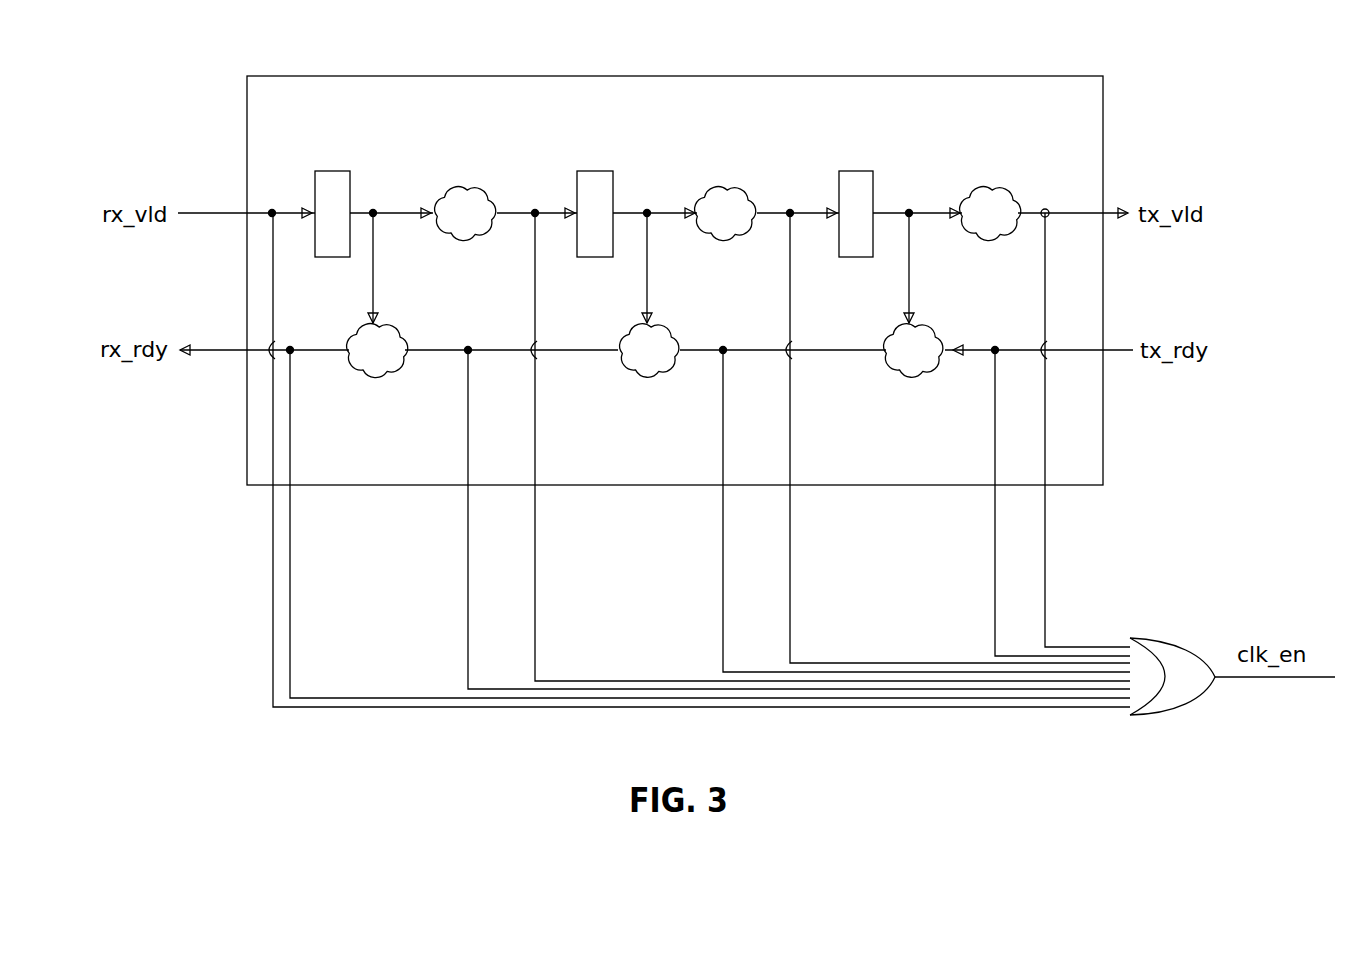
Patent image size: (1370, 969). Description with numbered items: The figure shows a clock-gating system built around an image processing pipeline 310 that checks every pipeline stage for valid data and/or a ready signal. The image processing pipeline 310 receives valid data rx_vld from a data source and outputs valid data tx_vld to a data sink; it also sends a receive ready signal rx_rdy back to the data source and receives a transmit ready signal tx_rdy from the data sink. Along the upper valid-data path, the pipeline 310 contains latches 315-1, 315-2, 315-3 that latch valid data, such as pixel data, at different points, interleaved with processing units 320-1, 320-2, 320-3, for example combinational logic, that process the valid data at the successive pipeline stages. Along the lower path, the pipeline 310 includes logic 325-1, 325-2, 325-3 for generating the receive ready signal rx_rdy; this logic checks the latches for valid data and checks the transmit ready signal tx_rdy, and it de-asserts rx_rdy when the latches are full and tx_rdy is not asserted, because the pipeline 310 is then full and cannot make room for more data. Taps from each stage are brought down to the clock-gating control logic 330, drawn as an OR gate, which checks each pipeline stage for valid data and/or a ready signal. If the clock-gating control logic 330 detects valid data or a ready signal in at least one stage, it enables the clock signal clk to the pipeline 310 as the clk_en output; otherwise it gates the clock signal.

The image processing pipeline 310 is at (878, 76).
The latch 315-1 is at (337, 171).
The latch 315-2 is at (596, 171).
The latch 315-3 is at (856, 171).
The processing unit 320-1 is at (458, 187).
The processing unit 320-2 is at (718, 187).
The processing unit 320-3 is at (983, 187).
The logic 325-1 is at (382, 325).
The logic 325-2 is at (662, 325).
The logic 325-3 is at (925, 325).
The clock-gating control logic 330 is at (1163, 640).